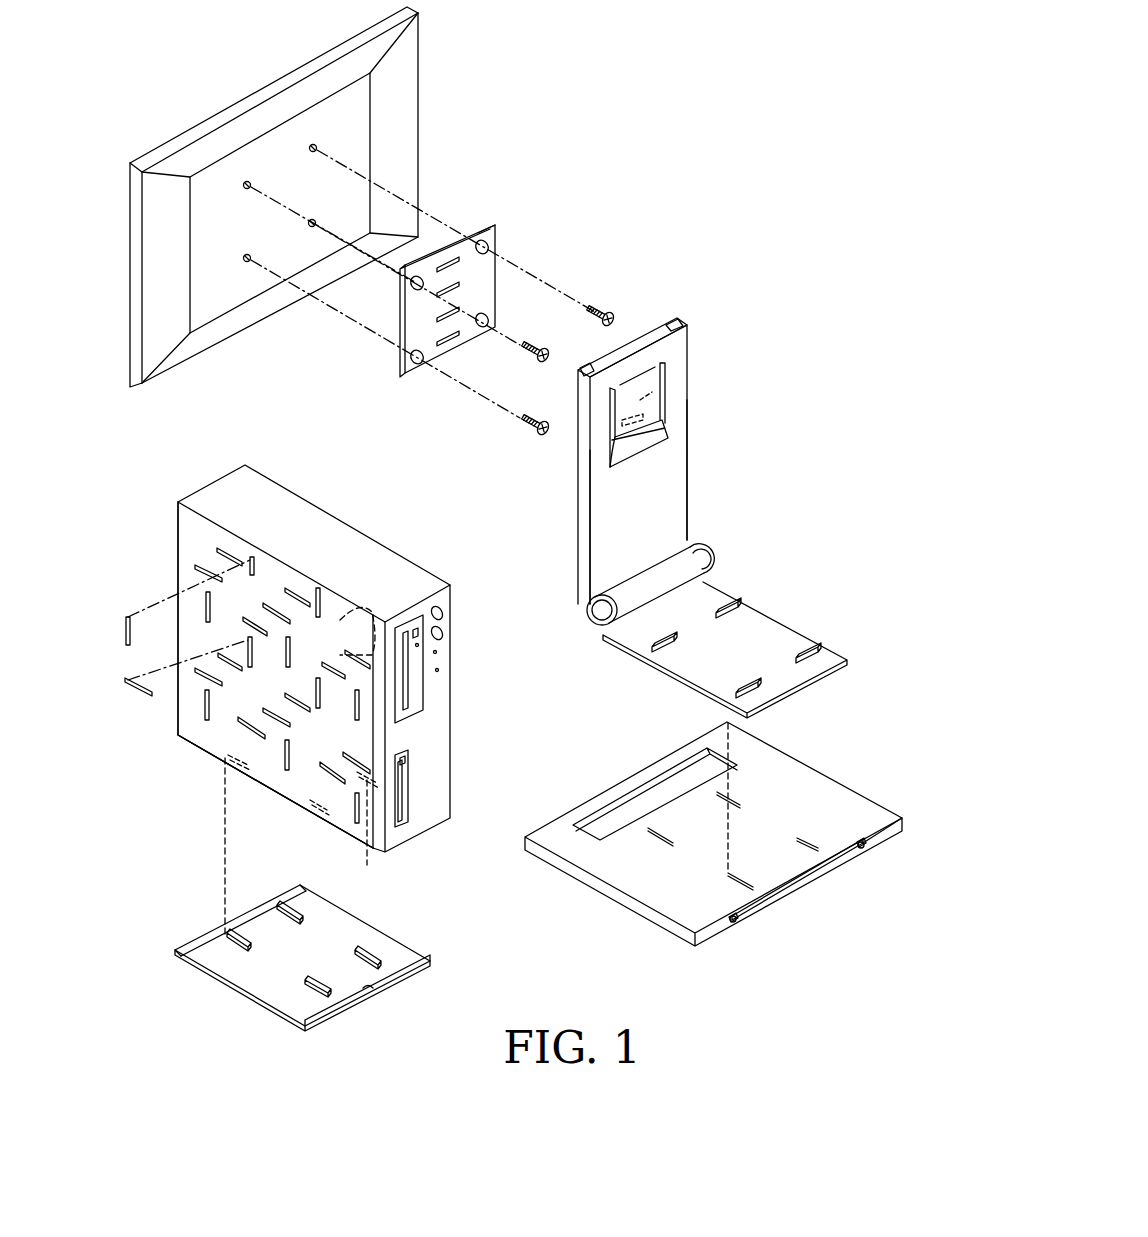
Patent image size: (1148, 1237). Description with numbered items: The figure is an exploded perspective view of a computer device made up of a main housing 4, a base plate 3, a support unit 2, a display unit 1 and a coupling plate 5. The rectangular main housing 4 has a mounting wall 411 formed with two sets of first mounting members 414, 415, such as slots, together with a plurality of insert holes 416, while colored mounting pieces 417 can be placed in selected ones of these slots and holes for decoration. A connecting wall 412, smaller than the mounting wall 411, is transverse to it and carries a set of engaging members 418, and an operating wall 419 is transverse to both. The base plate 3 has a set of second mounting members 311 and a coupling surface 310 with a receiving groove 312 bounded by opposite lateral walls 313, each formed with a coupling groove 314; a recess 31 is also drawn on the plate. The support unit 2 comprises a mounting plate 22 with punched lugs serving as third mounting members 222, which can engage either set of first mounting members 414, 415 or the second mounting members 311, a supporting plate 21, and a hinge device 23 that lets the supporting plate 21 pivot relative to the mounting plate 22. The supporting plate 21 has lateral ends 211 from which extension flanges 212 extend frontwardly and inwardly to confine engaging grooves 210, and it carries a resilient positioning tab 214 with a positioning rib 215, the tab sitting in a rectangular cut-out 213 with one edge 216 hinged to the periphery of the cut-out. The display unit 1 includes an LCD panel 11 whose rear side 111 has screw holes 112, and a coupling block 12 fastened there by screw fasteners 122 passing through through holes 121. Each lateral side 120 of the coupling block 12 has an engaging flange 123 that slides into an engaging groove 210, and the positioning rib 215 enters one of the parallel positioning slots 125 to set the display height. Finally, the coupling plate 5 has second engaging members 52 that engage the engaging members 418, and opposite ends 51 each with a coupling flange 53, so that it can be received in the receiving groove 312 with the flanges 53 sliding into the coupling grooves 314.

The display unit 1 is at (458, 43).
The liquid crystal display panel 11 is at (255, 92).
The rear side 111 is at (403, 78).
The screw holes 112 is at (316, 148).
The coupling block 12 is at (508, 240).
The lateral sides 120 is at (415, 330).
The through holes 121 is at (485, 240).
The screw fasteners 122 is at (606, 311).
The engaging flange 123 is at (492, 228).
The positioning slots 125 is at (460, 262).
The support unit 2 is at (758, 505).
The supporting plate 21 is at (672, 462).
The engaging grooves 210 is at (683, 321).
The lateral ends 211 is at (688, 490).
The extension flanges 212 is at (673, 321).
The rectangular cut-out 213 is at (612, 455).
The resilient positioning tab 214 is at (657, 427).
The positioning rib 215 is at (660, 393).
The edge 216 is at (642, 377).
The mounting plate 22 is at (763, 623).
The third mounting members 222 is at (784, 682).
The hinge device 23 is at (712, 545).
The base plate 3 is at (633, 773).
The recess 31 is at (843, 788).
The coupling surface 310 is at (880, 843).
The second mounting members 311 is at (803, 838).
The receiving groove 312 is at (795, 880).
The lateral walls 313 is at (853, 853).
The coupling groove 314 is at (860, 843).
The main housing 4 is at (370, 507).
The mounting wall 411 is at (207, 533).
The connecting wall 412 is at (213, 758).
The first mounting members 414 is at (255, 560).
The first mounting members 415 is at (262, 630).
The insert holes 416 is at (356, 638).
The colored mounting pieces 417 is at (128, 617).
The engaging members 418 is at (307, 807).
The operating wall 419 is at (447, 627).
The coupling plate 5 is at (400, 942).
The opposite ends 51 is at (208, 933).
The second engaging members 52 is at (370, 955).
The coupling flange 53 is at (268, 900).